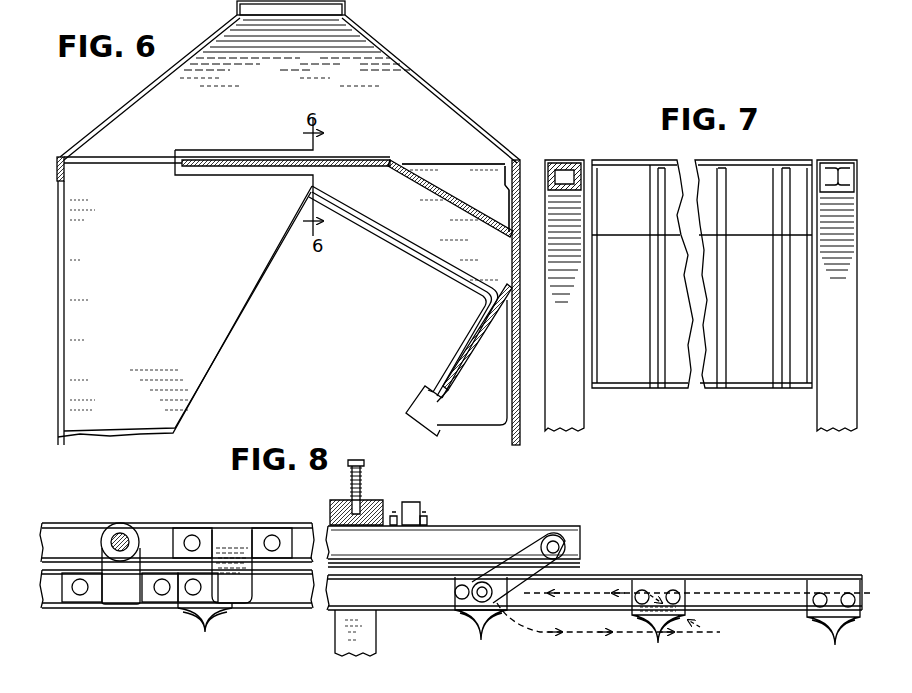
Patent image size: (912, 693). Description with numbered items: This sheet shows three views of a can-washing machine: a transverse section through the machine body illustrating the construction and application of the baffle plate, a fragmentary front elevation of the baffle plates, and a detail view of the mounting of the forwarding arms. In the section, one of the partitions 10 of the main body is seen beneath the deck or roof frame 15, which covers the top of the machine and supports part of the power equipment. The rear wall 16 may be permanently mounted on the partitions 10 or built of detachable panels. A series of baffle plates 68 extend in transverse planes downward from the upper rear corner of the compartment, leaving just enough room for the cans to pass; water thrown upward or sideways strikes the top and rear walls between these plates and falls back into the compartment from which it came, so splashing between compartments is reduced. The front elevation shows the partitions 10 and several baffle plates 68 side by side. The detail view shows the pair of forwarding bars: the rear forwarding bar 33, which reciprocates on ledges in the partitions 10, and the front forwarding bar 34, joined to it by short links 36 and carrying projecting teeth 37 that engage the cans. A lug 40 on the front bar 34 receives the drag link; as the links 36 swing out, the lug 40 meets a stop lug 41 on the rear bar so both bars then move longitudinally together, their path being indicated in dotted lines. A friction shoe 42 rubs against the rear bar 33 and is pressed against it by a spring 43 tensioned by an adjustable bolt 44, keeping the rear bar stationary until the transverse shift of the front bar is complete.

In FIG. 6, the partition 10 is at (288, 301).
In FIG. 7, the partition 10 is at (574, 412).
In FIG. 8, the partition 10 is at (372, 628).
In FIG. 6, the deck or roof frame 15 is at (430, 88).
In FIG. 6, the rear wall 16 is at (512, 313).
In FIG. 6, the baffle plate 68 is at (436, 210).
In FIG. 7, the baffle plate 68 is at (770, 288).
In FIG. 8, the rear forwarding bar 33 is at (483, 540).
In FIG. 8, the front forwarding bar 34 is at (775, 606).
In FIG. 8, the link 36 is at (560, 560).
In FIG. 8, the projecting tooth 37 is at (809, 598).
In FIG. 8, the lug 40 is at (134, 540).
In FIG. 8, the stop lug 41 is at (232, 560).
In FIG. 8, the shoe 42 is at (391, 520).
In FIG. 8, the spring 43 is at (362, 490).
In FIG. 8, the adjustable bolt 44 is at (358, 466).